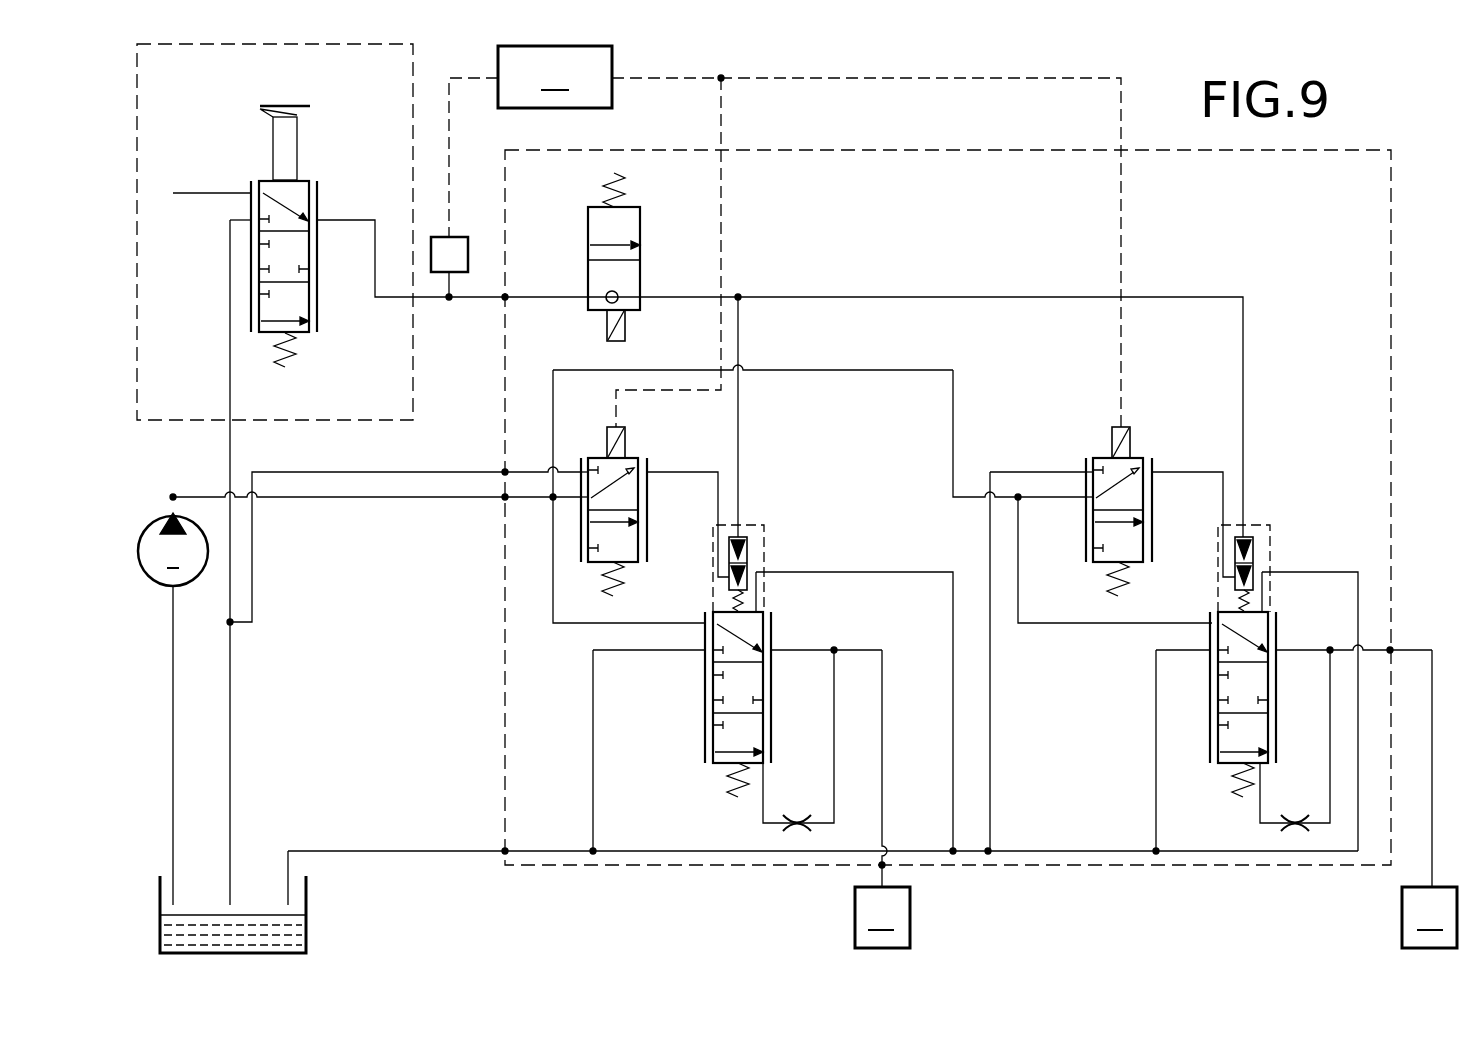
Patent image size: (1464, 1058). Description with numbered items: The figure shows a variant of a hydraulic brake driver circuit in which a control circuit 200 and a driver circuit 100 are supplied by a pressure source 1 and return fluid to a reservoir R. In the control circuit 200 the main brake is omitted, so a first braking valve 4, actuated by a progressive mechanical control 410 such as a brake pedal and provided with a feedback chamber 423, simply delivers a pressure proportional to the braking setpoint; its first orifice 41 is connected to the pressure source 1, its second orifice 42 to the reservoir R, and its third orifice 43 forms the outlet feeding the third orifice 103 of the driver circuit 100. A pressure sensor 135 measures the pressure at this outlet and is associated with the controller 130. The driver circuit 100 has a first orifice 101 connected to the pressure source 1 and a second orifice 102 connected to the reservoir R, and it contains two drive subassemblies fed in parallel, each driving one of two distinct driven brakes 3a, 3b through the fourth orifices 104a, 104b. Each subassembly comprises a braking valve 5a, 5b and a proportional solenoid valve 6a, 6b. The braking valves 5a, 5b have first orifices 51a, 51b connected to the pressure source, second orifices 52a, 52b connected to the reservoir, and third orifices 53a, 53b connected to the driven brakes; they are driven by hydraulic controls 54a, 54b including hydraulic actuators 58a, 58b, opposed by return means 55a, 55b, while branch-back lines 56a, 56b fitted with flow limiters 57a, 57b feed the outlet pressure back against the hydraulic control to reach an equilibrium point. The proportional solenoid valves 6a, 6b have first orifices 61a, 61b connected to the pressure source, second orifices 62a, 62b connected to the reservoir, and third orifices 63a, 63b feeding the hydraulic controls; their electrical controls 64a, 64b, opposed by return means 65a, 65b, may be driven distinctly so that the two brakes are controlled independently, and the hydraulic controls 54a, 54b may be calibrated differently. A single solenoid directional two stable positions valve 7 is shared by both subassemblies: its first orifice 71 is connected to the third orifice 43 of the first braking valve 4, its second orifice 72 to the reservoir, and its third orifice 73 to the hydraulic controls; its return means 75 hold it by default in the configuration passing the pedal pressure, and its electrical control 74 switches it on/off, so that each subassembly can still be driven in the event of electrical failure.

The pressure source 1 is at (173, 549).
The driven brake 3a is at (882, 917).
The driven brake 3b is at (1429, 917).
The first braking valve 4 is at (302, 240).
The first orifice 41 is at (252, 186).
The second orifice 42 is at (250, 226).
The third orifice 43 is at (320, 222).
The progressive mechanical control 410 is at (285, 105).
The feedback chamber 423 is at (285, 368).
The braking valve 5a is at (737, 719).
The first orifice 51a is at (705, 620).
The second orifice 52a is at (705, 652).
The third orifice 53a is at (771, 642).
The hydraulic control 54a is at (833, 669).
The return means 55a is at (718, 798).
The branch-back line 56a is at (834, 728).
The flow limiter 57a is at (797, 814).
The hydraulic actuator 58a is at (752, 545).
The braking valve 5b is at (1292, 718).
The first orifice 51b is at (1212, 620).
The second orifice 52b is at (1212, 652).
The third orifice 53b is at (1278, 642).
The hydraulic control 54b is at (1288, 669).
The return means 55b is at (1236, 798).
The branch-back line 56b is at (1330, 736).
The flow limiter 57b is at (1295, 814).
The hydraulic actuator 58b is at (1258, 545).
The proportional solenoid valve 6a is at (618, 510).
The first orifice 61a is at (580, 500).
The second orifice 62a is at (581, 464).
The third orifice 63a is at (652, 466).
The electrical control 64a is at (626, 432).
The return means 65a is at (613, 584).
The proportional solenoid valve 6b is at (1131, 510).
The first orifice 61b is at (1086, 505).
The second orifice 62b is at (1086, 464).
The third orifice 63b is at (1157, 466).
The electrical control 64b is at (1131, 432).
The return means 65b is at (1118, 584).
The solenoid directional two stable positions valve 7 is at (624, 250).
The first orifice 71 is at (590, 302).
The second orifice 72 is at (586, 262).
The third orifice 73 is at (642, 292).
The electrical control 74 is at (626, 326).
The return means 75 is at (606, 182).
The driver circuit 100 is at (840, 150).
The first orifice 101 is at (505, 498).
The second orifice 102 is at (505, 471).
The third orifice 103 is at (500, 300).
The fourth orifice 104a is at (880, 866).
The fourth orifice 104b is at (1400, 650).
The controller 130 is at (785, 236).
The pressure sensor 135 is at (460, 250).
The control circuit 200 is at (140, 432).
The reservoir R is at (158, 923).